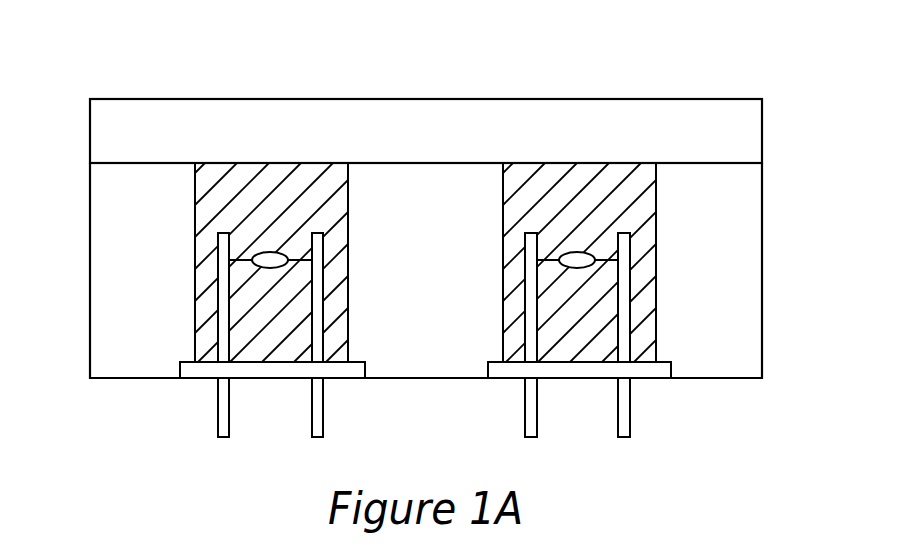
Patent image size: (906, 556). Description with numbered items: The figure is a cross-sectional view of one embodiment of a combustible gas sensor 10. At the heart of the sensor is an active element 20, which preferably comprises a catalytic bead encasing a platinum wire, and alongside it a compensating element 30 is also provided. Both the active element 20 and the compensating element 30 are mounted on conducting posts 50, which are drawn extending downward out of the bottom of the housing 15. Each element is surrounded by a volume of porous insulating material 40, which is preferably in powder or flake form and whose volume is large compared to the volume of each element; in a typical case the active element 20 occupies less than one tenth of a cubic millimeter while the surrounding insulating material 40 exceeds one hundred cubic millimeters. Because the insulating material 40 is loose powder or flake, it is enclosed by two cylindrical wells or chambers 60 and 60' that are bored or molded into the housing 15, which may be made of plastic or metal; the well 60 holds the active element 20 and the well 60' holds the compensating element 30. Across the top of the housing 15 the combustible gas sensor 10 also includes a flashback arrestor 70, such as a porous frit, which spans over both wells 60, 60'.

The combustible gas sensor 10 is at (127, 75).
The housing 15 is at (745, 242).
The active element 20 is at (270, 255).
The compensating element 30 is at (577, 255).
The porous insulating material 40 is at (218, 182).
The conducting posts 50 is at (312, 407).
The cylindrical well 60 is at (226, 347).
The cylindrical well 60' is at (636, 366).
The flashback arrestor 70 is at (713, 112).